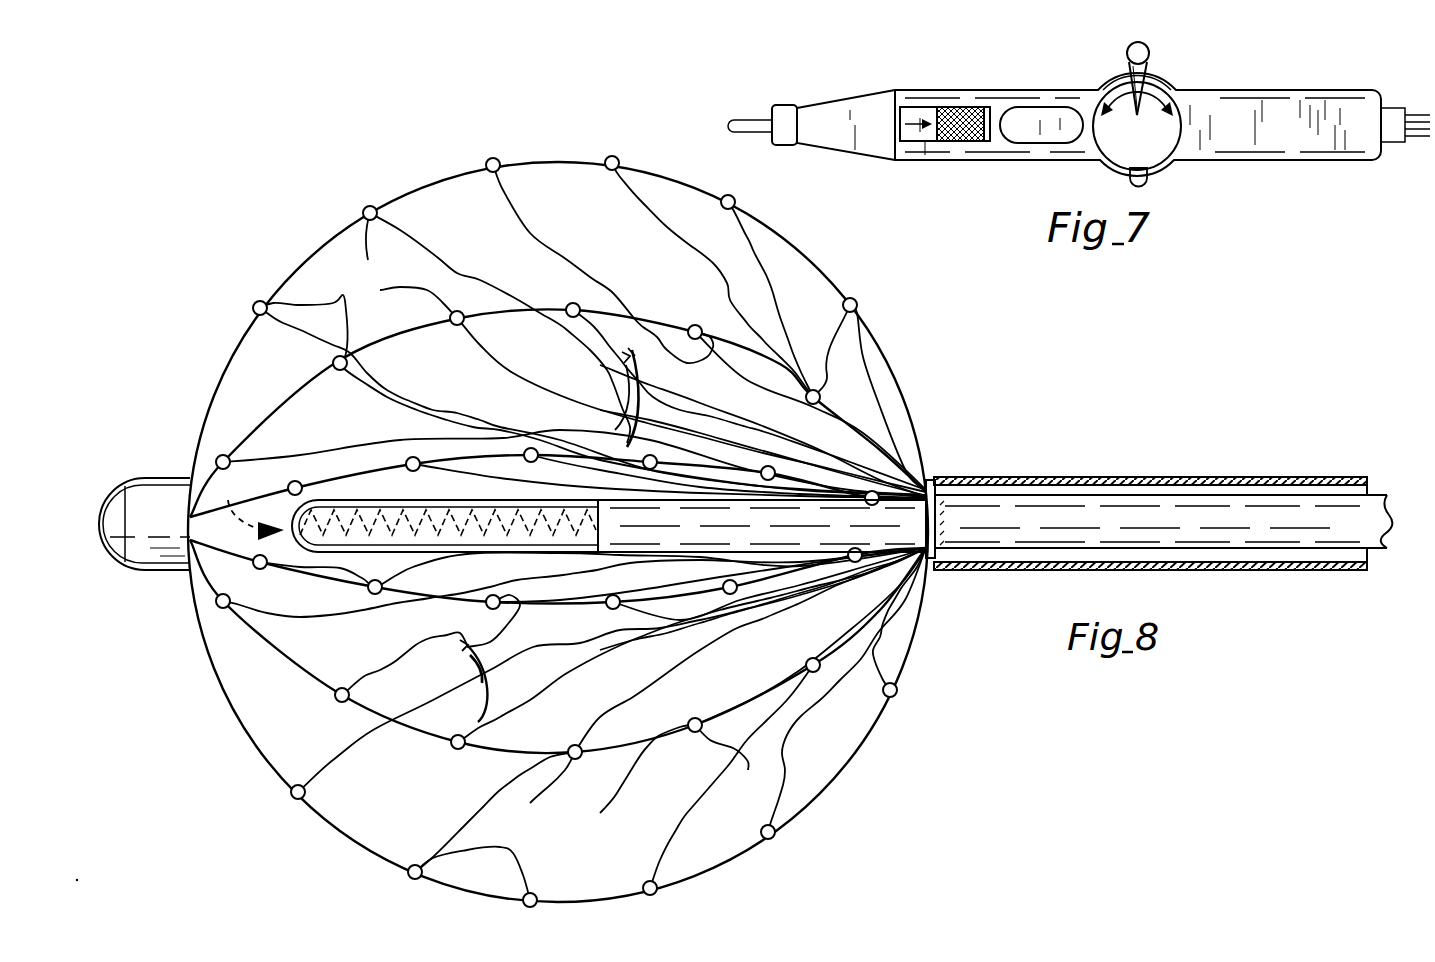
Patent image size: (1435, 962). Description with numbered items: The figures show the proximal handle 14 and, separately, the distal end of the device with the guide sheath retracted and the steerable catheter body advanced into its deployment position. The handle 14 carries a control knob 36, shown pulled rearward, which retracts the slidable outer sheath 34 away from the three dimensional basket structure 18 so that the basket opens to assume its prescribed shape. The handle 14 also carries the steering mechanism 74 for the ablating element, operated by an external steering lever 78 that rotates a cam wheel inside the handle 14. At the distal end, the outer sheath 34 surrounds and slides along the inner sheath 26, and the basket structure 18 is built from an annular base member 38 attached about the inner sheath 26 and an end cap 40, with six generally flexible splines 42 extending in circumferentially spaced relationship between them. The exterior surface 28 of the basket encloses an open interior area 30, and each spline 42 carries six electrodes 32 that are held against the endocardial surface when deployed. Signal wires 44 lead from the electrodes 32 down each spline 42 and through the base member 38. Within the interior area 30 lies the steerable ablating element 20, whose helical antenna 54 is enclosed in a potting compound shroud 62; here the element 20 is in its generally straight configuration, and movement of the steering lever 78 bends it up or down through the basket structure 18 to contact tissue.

In FIG. 7, the handle 14 is at (1272, 98).
In FIG. 8, the three dimensional basket structure 18 is at (926, 422).
In FIG. 8, the steerable ablating element 20 is at (577, 527).
In FIG. 8, the inner sheath 26 is at (1255, 496).
In FIG. 8, the exterior surface 28 is at (836, 258).
In FIG. 8, the open interior area 30 is at (480, 228).
In FIG. 8, the electrodes 32 is at (752, 826).
In FIG. 7, the outer sheath 34 is at (755, 118).
In FIG. 8, the outer sheath 34 is at (1086, 477).
In FIG. 7, the control knob 36 is at (958, 115).
In FIG. 8, the annular base member 38 is at (932, 482).
In FIG. 8, the end cap 40 is at (172, 566).
In FIG. 8, the splines 42 is at (505, 160).
In FIG. 8, the signal wires 44 is at (533, 524).
In FIG. 8, the antenna 54 is at (472, 512).
In FIG. 8, the shroud 62 is at (428, 542).
In FIG. 7, the steering mechanism 74 is at (1180, 70).
In FIG. 7, the steering lever 78 is at (1128, 57).